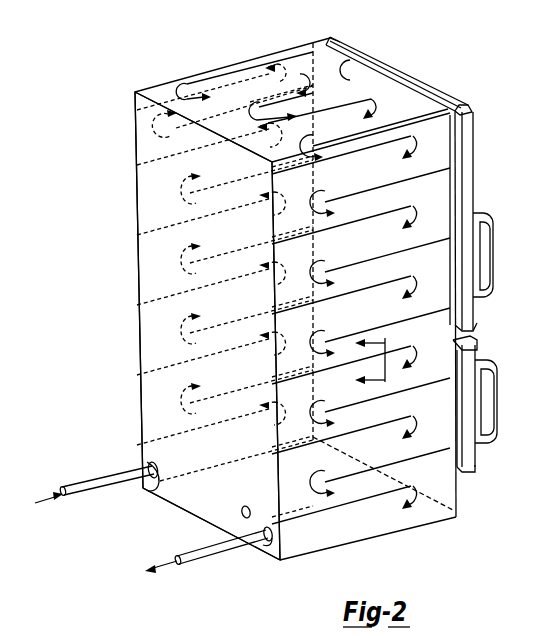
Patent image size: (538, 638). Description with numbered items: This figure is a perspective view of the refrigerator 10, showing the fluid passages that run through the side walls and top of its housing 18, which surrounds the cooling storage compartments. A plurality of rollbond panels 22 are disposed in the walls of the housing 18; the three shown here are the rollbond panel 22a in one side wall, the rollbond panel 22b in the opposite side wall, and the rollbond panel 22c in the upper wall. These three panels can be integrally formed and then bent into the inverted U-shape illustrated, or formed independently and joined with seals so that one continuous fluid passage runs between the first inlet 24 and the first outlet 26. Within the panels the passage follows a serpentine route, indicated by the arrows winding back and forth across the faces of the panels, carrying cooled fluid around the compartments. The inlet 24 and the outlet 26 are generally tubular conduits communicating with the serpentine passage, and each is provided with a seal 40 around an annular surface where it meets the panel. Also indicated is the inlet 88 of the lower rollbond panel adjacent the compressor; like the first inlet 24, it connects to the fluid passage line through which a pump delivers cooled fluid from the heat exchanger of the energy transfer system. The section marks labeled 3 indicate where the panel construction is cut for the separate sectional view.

The refrigerator 10 is at (143, 61).
The housing 18 is at (197, 73).
The rollbond panels 22 is at (495, 404).
The rollbond panel 22a is at (150, 260).
The rollbond panel 22b is at (437, 143).
The rollbond panel 22c is at (418, 83).
The first inlet 24 is at (96, 482).
The first outlet 26 is at (206, 558).
The seal 40 is at (157, 488).
The inlet 88 is at (397, 0).
The section line 3- 3 is at (359, 371).